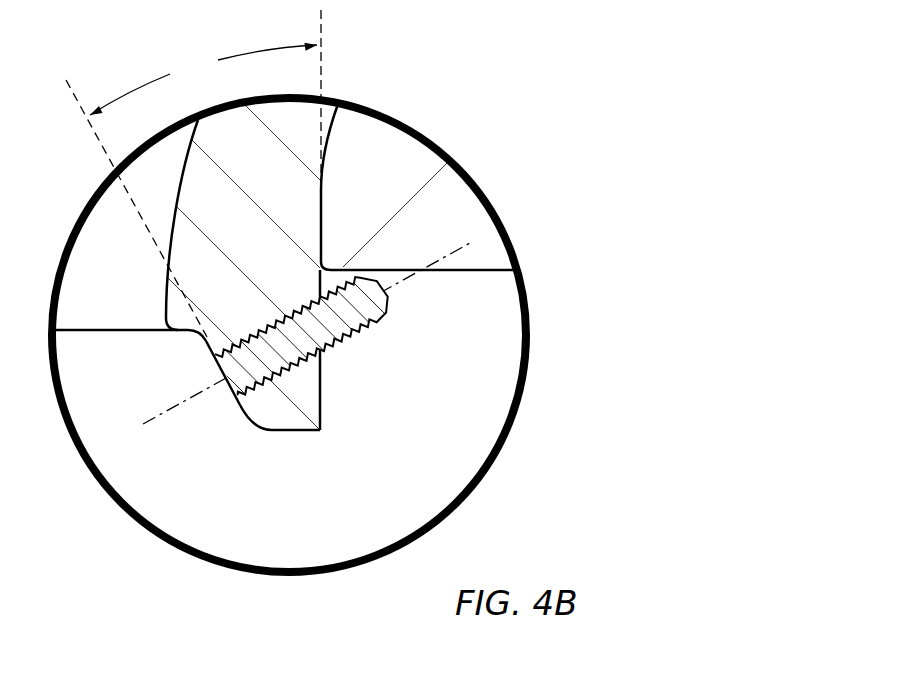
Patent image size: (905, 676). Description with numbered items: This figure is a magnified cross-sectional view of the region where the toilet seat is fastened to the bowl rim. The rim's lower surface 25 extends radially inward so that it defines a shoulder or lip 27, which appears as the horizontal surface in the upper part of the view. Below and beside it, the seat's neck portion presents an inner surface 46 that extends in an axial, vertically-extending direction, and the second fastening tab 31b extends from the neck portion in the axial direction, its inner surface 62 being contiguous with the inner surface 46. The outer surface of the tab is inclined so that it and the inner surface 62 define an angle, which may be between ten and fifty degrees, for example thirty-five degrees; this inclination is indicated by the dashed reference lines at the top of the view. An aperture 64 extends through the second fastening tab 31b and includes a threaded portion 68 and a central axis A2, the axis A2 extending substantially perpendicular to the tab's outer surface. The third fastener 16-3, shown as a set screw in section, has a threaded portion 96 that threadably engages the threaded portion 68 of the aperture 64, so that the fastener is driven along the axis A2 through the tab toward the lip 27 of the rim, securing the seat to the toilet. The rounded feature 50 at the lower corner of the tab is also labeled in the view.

The threaded portion 68 is at (210, 343).
The third fastener 16-3 is at (230, 392).
The rounded edge 50 is at (253, 417).
The second fastening tab 31b is at (292, 430).
The inner surface 62 is at (320, 407).
The inner surface 46 is at (323, 245).
The lower surface 25 is at (340, 277).
The lip 27 is at (392, 268).
The central axis A2 is at (143, 424).
The aperture 64 is at (311, 326).
The threaded portion 96 is at (355, 333).